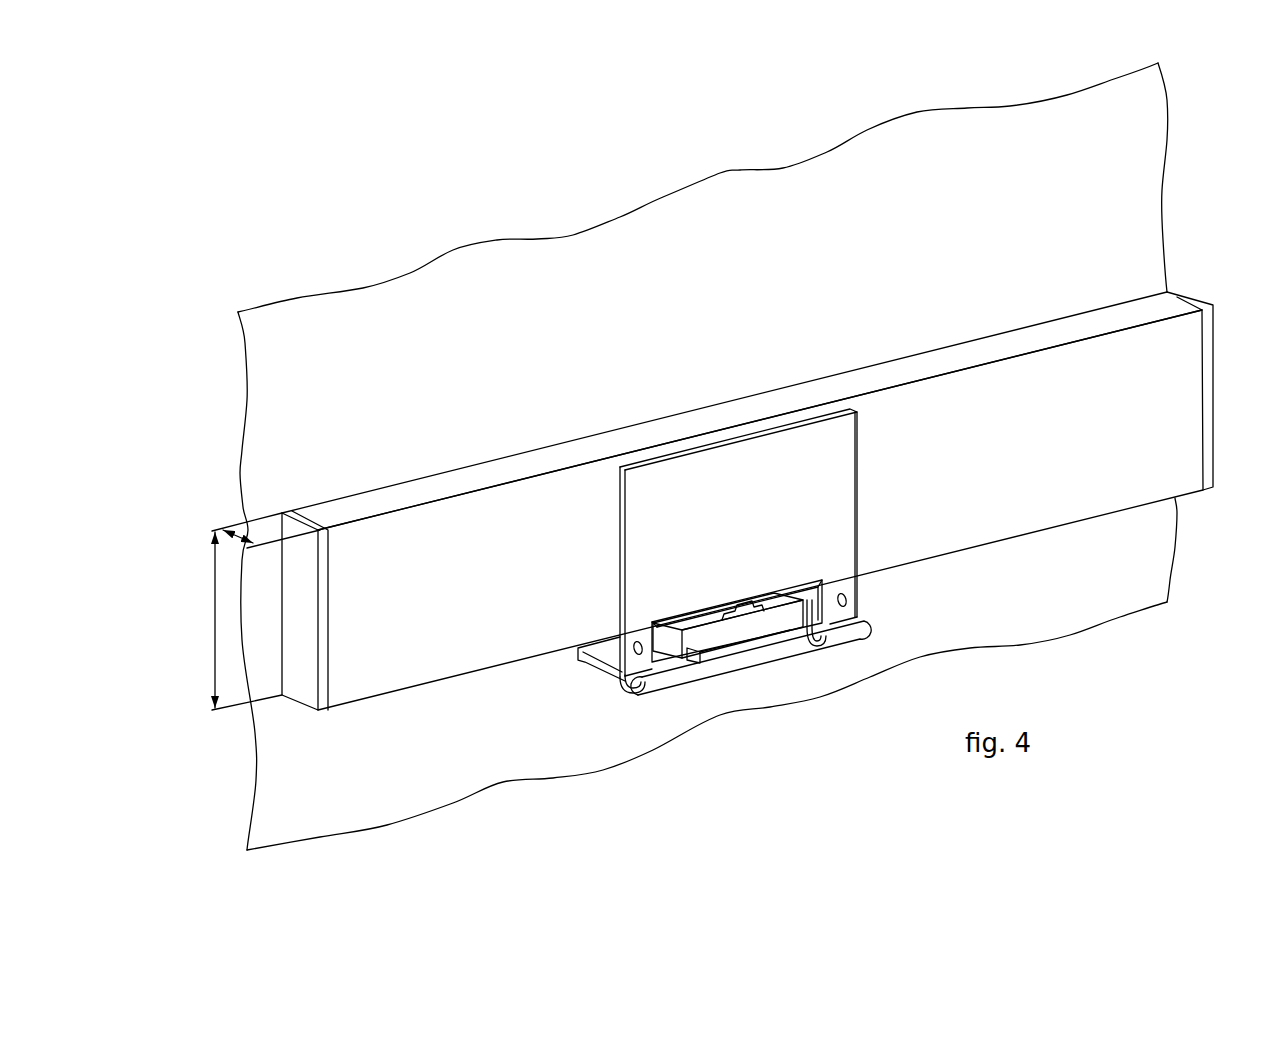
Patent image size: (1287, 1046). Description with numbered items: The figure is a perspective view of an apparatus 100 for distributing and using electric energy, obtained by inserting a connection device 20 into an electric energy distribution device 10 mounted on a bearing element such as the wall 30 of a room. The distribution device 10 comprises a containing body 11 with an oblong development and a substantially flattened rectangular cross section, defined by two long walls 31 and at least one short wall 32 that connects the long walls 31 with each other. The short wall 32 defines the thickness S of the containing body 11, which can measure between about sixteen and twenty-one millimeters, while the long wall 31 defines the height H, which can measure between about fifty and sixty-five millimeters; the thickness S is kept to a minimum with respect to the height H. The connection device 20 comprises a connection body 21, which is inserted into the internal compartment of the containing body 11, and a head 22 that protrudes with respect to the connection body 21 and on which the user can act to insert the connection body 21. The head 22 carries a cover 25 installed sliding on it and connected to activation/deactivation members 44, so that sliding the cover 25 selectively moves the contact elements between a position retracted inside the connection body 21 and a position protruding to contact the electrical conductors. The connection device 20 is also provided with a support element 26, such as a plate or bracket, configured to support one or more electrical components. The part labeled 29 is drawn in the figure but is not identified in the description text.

The electric energy distribution device 10 is at (776, 472).
The containing body 11 is at (959, 361).
The connection device 20 is at (726, 556).
The connection body 21 is at (707, 632).
The head 22 is at (603, 665).
The cover 25 is at (602, 677).
The support element 26 is at (742, 463).
The frame 29 is at (648, 630).
The wall 30 is at (776, 446).
The long wall 31 is at (1177, 391).
The short wall 32 is at (765, 398).
The activation/deactivation members 44 is at (742, 612).
The apparatus 100 is at (966, 570).
The height H is at (213, 622).
The thickness S is at (238, 536).